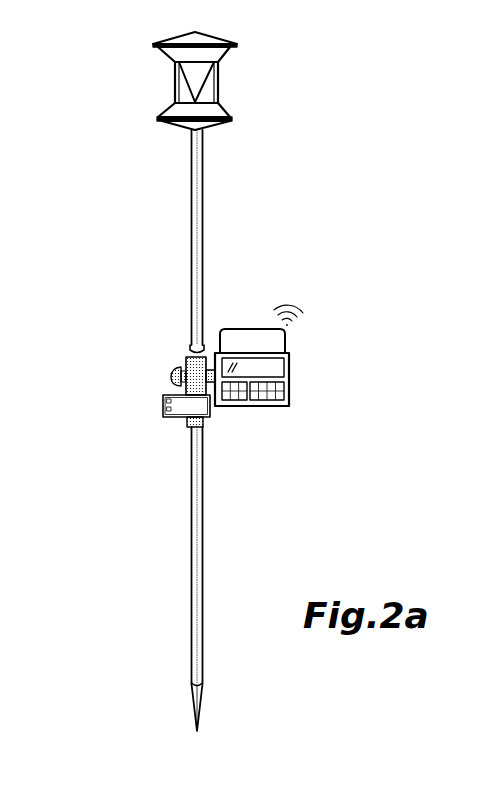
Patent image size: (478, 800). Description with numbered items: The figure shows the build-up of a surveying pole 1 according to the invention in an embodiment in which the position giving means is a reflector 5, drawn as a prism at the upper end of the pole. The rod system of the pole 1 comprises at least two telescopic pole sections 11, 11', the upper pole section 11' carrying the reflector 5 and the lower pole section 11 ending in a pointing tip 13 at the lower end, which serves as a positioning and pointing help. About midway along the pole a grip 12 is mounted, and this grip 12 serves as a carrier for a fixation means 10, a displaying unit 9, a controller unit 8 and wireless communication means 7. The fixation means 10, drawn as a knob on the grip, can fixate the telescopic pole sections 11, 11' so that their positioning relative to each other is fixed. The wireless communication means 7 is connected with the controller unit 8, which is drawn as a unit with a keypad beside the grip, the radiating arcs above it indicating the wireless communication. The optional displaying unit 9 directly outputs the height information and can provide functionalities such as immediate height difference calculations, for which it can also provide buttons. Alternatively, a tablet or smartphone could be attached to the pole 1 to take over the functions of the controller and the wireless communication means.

The surveying pole 1 is at (84, 112).
The reflector 5 is at (205, 93).
The wireless communication means 7 is at (263, 329).
The controller unit 8 is at (280, 388).
The displaying unit 9 is at (163, 400).
The fixation means 10 is at (172, 376).
The pole section 11 is at (160, 555).
The pole section 11' is at (158, 237).
The grip 12 is at (190, 366).
The pointing tip 13 is at (194, 702).